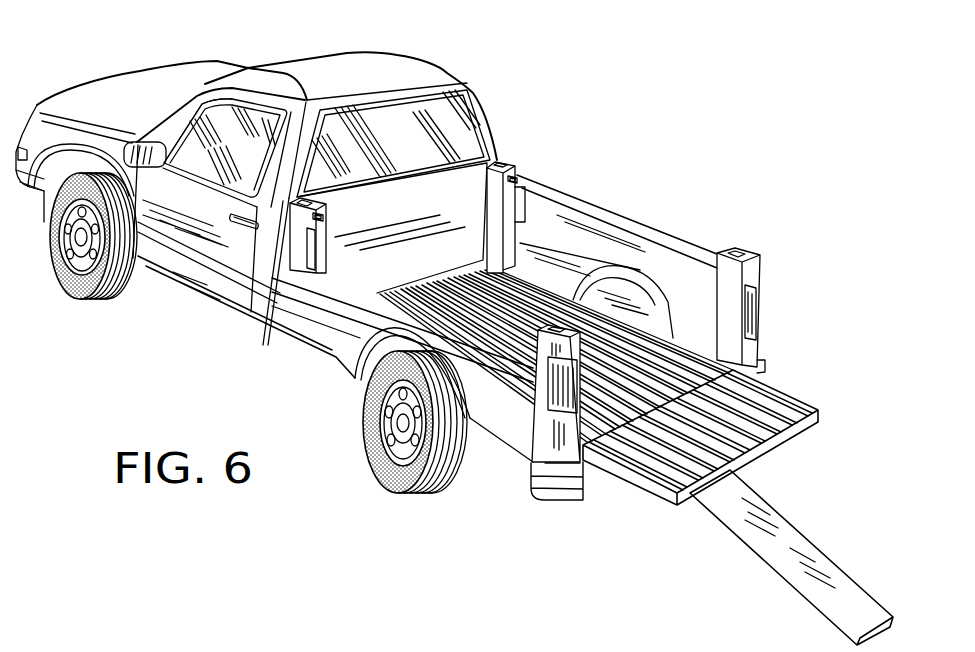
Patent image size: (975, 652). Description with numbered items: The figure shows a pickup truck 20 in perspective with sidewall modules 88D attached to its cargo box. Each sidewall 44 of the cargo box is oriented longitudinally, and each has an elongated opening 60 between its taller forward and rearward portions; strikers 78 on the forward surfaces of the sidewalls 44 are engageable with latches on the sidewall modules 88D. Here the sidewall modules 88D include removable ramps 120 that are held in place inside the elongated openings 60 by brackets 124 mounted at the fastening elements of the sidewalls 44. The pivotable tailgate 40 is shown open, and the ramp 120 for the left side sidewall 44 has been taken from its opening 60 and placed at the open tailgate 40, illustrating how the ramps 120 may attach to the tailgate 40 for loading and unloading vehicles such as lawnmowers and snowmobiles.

The pickup truck 20 is at (487, 48).
The pivotable tailgate 40 is at (782, 398).
The sidewall 44 is at (483, 403).
The elongated opening 60 is at (347, 288).
The striker 78 is at (313, 217).
The sidewall module 88D is at (585, 212).
The removable ramp 120 is at (773, 550).
The bracket 124 is at (308, 263).